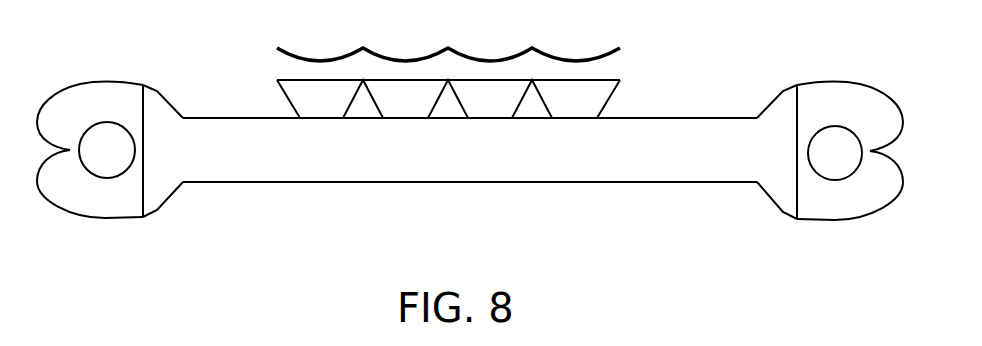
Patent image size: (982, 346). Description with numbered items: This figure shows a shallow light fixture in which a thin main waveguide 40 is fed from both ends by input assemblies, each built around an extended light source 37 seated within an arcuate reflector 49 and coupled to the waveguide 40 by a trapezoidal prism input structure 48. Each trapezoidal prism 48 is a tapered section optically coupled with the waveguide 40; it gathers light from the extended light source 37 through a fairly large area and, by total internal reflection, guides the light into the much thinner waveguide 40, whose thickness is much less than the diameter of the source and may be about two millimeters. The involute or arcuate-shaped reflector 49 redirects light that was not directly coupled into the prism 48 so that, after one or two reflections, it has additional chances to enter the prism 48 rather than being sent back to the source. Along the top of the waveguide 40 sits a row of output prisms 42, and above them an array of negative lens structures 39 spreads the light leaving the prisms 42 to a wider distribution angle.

The extended light source 37 is at (107, 178).
The negative lens structure 39 is at (613, 52).
The waveguide 40 is at (272, 183).
The prism 42 is at (617, 80).
The trapezoidal prism input structure 48 is at (165, 197).
The arcuate reflector 49 is at (87, 82).